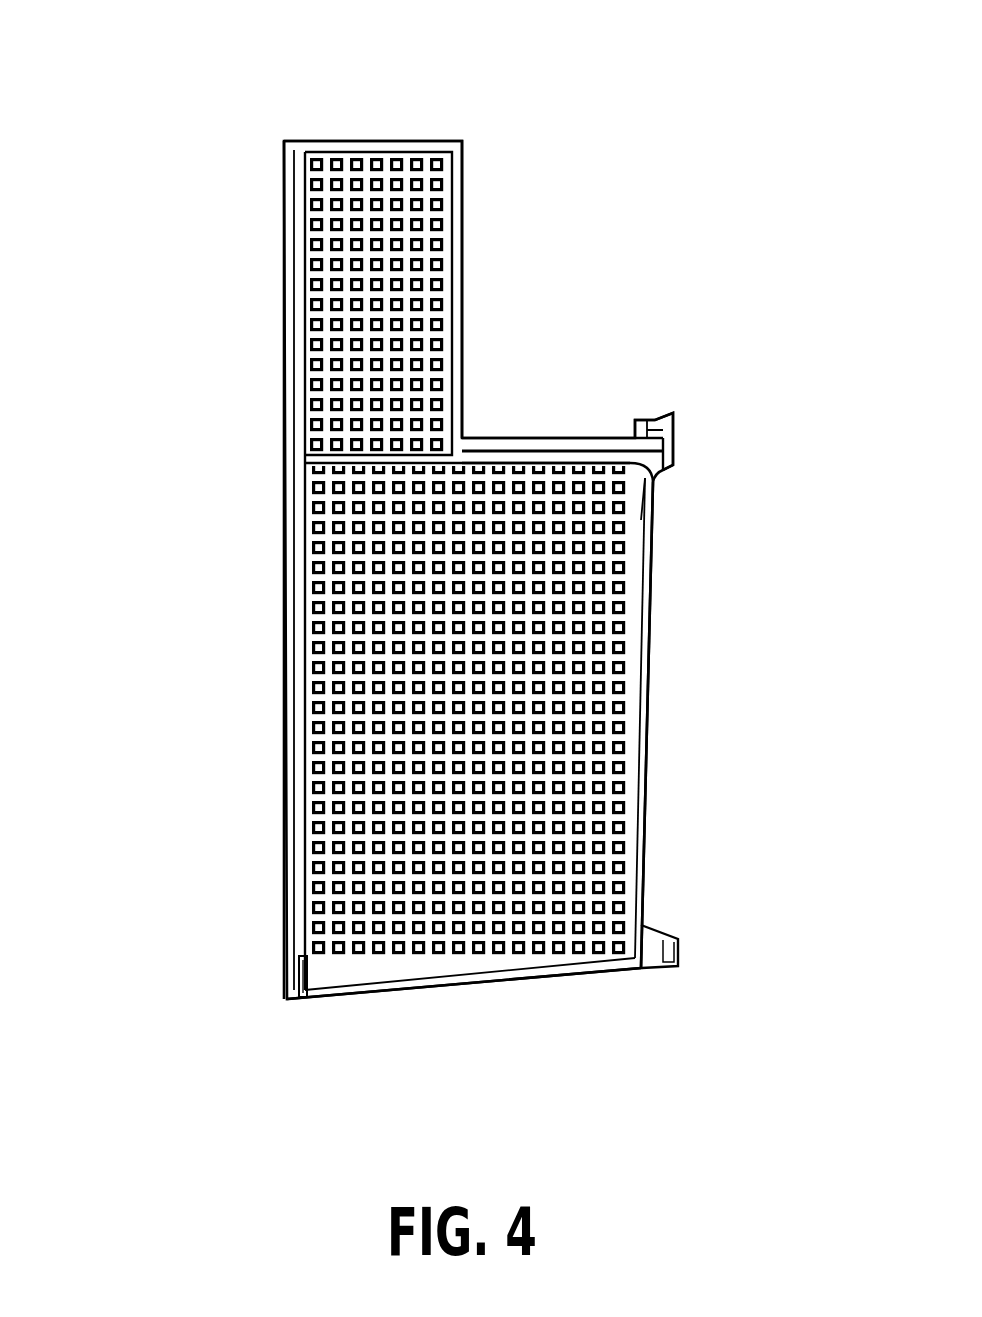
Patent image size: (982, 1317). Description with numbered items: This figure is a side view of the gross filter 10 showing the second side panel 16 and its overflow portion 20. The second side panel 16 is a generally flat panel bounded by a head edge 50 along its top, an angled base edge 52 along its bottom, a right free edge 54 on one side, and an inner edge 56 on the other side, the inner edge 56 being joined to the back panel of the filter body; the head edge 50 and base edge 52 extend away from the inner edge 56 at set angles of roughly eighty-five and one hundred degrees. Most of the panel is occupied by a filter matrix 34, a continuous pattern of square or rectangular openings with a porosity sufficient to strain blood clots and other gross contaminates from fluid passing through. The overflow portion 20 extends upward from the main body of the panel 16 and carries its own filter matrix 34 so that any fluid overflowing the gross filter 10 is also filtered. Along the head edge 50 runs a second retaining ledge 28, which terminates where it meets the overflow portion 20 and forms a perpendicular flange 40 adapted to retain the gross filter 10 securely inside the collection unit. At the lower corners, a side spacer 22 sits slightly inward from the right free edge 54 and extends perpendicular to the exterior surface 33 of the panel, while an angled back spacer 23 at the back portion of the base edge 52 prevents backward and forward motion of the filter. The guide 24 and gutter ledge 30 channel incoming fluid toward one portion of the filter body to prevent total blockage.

The gross filter 10 is at (265, 322).
The second side panel 16 is at (399, 753).
The overflow portion 20 is at (405, 207).
The side spacer 22 is at (302, 1000).
The back spacer 23 is at (647, 718).
The guide 24 is at (372, 141).
The second retaining ledge 28 is at (653, 485).
The gutter ledge 30 is at (655, 419).
The exterior surface 33 is at (413, 930).
The filter matrix 34 is at (337, 757).
The flange 40 is at (552, 438).
The head edge 50 is at (552, 465).
The angled base edge 52 is at (478, 987).
The right free edge 54 is at (285, 548).
The inner edge 56 is at (658, 948).